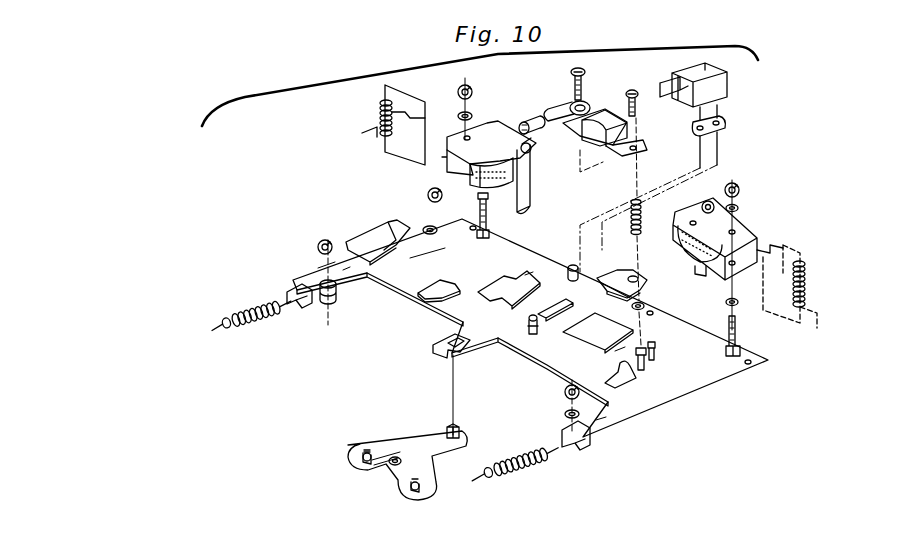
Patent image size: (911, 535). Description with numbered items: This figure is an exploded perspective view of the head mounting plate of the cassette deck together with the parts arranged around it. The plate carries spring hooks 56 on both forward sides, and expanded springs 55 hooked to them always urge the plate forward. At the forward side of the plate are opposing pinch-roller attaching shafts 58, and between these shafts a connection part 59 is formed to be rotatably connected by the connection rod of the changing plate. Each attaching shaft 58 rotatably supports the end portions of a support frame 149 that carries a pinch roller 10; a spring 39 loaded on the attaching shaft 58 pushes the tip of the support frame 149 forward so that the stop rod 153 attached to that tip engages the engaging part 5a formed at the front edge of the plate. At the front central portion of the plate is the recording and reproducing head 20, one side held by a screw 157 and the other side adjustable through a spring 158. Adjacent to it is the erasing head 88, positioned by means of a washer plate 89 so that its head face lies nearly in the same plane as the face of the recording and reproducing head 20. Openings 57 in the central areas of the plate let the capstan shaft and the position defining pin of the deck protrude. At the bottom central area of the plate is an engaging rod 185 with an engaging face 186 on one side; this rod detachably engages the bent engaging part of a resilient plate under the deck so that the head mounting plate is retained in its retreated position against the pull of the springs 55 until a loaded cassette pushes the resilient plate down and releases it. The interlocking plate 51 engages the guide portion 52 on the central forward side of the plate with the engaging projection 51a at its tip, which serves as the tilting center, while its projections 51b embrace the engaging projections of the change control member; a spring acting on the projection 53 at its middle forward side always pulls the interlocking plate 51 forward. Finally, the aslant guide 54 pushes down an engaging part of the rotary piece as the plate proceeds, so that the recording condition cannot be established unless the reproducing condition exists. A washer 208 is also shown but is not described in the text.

The engaging part 5a is at (553, 262).
The pinch roller 10 is at (458, 176).
The recording and reproducing head 20 is at (590, 149).
The spring 39 is at (378, 115).
The interlocking plate 51 is at (424, 440).
The engaging projection 51a is at (462, 433).
The projections 51b is at (370, 470).
The guide portion 52 is at (430, 344).
The projection 53 is at (392, 455).
The aslant guide 54 is at (394, 221).
The springs 55 is at (265, 322).
The spring hooks 56 is at (300, 290).
The openings 57 is at (494, 282).
The pinch-roller attaching shafts 58 is at (487, 232).
The connection part 59 is at (622, 277).
The erasing head 88 is at (727, 92).
The washer plate 89 is at (722, 131).
The support frame 149 is at (493, 128).
The stop rod 153 is at (519, 202).
The screw 157 is at (586, 74).
The spring 158 is at (630, 219).
The engaging rod 185 is at (575, 336).
The engaging face 186 is at (526, 330).
The washer 208 is at (632, 305).